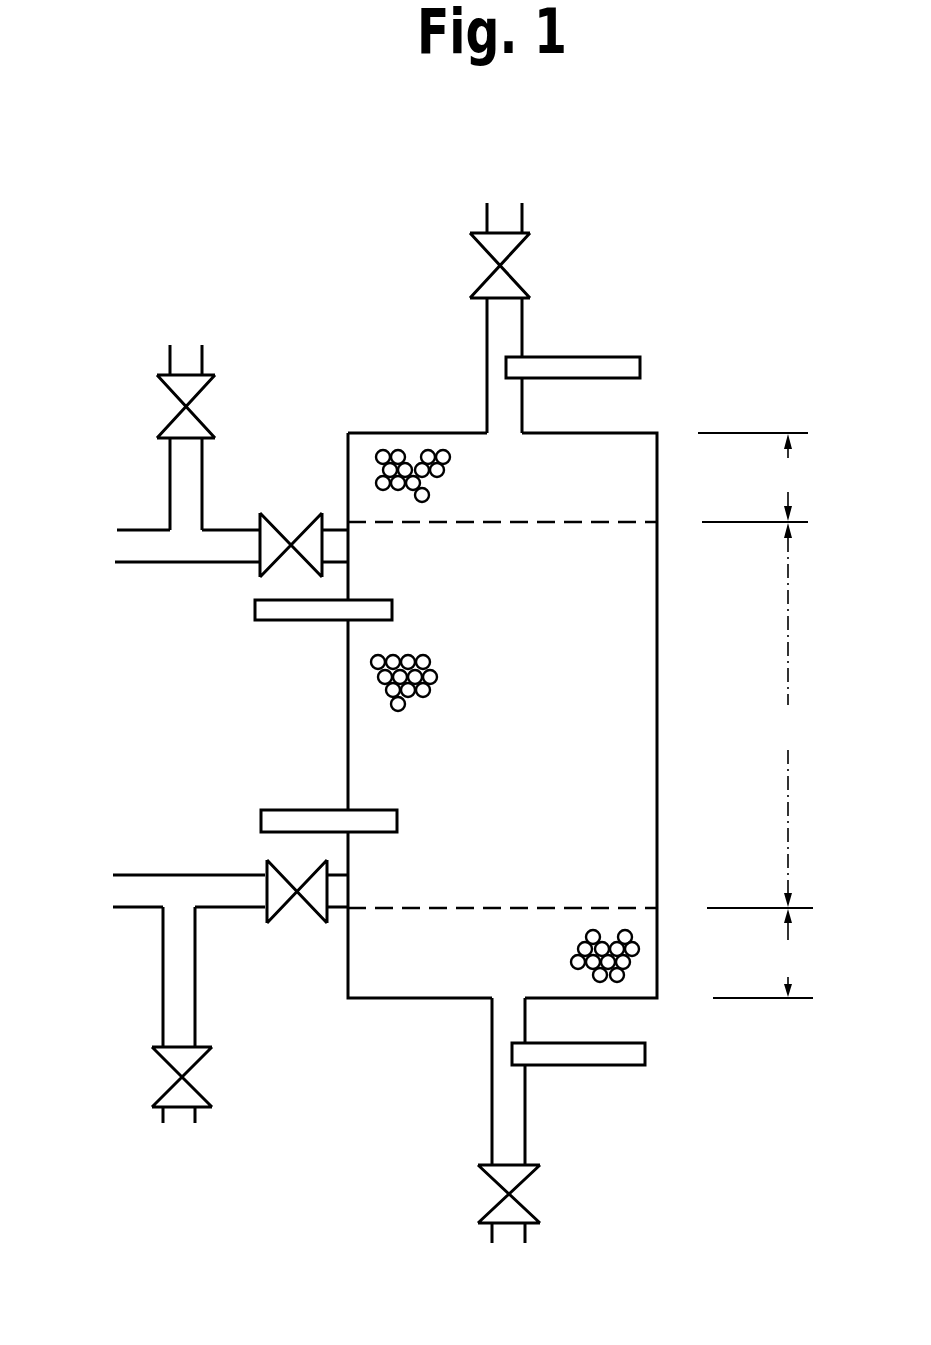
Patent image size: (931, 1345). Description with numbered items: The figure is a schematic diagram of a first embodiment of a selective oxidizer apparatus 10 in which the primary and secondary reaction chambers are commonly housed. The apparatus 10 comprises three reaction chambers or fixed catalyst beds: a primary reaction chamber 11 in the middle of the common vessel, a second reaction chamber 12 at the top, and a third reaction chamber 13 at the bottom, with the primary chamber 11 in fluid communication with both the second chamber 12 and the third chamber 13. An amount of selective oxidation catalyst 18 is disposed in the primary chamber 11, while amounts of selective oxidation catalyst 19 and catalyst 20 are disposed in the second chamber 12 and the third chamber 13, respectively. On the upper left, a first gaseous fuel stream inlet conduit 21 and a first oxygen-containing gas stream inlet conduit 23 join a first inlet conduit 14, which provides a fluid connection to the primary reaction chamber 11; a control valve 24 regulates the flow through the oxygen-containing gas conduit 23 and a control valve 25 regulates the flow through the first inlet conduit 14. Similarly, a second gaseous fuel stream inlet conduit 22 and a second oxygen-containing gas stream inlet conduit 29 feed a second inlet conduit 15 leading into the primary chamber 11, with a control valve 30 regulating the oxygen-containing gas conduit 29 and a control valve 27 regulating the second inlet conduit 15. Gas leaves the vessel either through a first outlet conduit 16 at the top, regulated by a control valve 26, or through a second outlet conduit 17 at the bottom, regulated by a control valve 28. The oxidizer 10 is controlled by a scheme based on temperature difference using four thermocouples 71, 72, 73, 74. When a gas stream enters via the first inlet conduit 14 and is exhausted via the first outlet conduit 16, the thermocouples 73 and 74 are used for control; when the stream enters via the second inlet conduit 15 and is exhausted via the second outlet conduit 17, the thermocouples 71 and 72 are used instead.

The selective oxidizer apparatus 10 is at (266, 278).
The primary reaction chamber 11 is at (788, 715).
The second reaction chamber 12 is at (578, 477).
The third reaction chamber 13 is at (580, 953).
The first inlet conduit 14 is at (233, 875).
The second inlet conduit 15 is at (222, 562).
The first outlet conduit 16 is at (495, 402).
The second outlet conduit 17 is at (492, 1032).
The selective oxidation catalyst 18 is at (385, 690).
The selective oxidation catalyst 19 is at (402, 450).
The selective oxidation catalyst 20 is at (612, 980).
The first gaseous fuel stream inlet conduit 21 is at (140, 875).
The second gaseous fuel stream inlet conduit 22 is at (135, 530).
The first oxygen-containing gas stream inlet conduit 23 is at (163, 987).
The control valve 24 is at (200, 1057).
The control valve 25 is at (277, 910).
The control valve 26 is at (527, 287).
The control valve 27 is at (308, 515).
The control valve 28 is at (530, 1180).
The second oxygen-containing gas stream inlet conduit 29 is at (170, 483).
The control valve 30 is at (158, 392).
The thermocouple 71 is at (284, 810).
The thermocouple 72 is at (600, 1067).
The thermocouple 73 is at (273, 620).
The thermocouple 74 is at (630, 357).